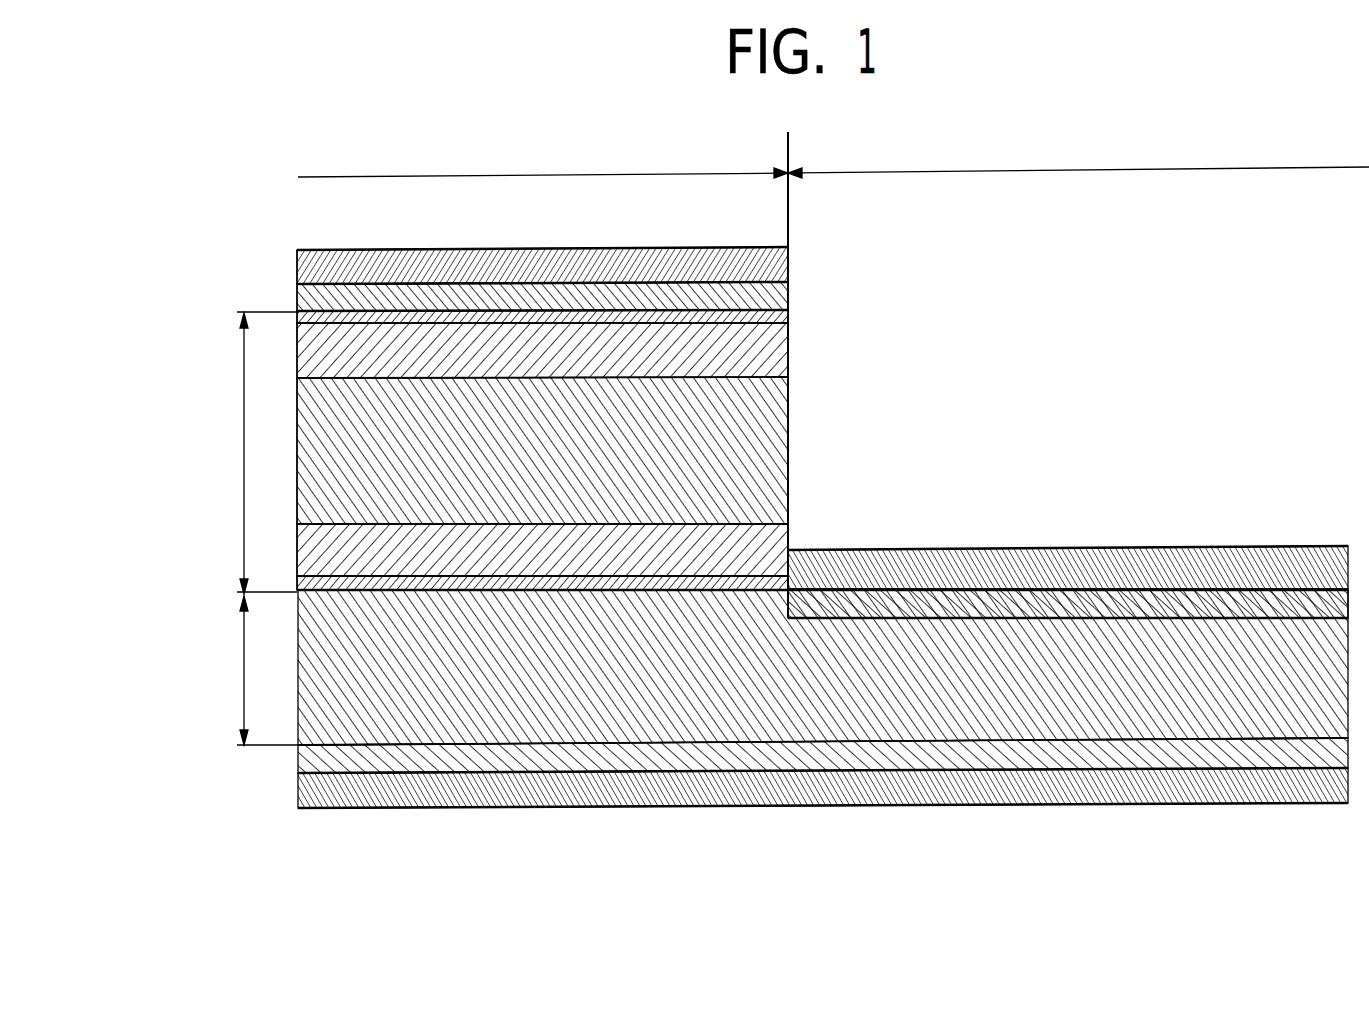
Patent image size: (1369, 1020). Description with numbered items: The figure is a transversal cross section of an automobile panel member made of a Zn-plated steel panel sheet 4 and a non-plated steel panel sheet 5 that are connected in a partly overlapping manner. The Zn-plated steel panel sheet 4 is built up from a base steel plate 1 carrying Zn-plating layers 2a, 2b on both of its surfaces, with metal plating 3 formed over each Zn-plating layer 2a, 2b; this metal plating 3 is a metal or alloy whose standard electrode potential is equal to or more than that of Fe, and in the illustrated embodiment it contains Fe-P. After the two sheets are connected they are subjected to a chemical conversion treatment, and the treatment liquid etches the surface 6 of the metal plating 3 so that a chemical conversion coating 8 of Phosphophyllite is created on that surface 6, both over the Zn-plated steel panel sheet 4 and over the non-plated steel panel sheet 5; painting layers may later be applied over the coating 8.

The base steel plate 1 is at (780, 417).
The Zn-plating layer 2a is at (780, 362).
The Zn-plating layer 2b is at (772, 540).
The metal plating 3 is at (790, 316).
The Zn-plated steel panel sheet 4 is at (148, 425).
The non-plated steel panel sheet 5 is at (148, 738).
The surface of the metal plating 6 is at (323, 294).
The chemical conversion coating (Phosphophyllite) 8 is at (408, 256).